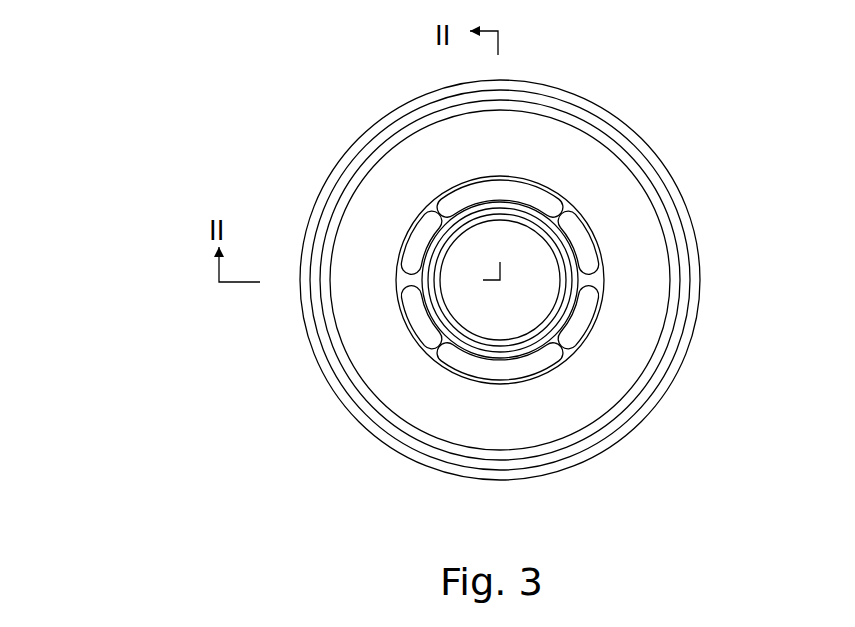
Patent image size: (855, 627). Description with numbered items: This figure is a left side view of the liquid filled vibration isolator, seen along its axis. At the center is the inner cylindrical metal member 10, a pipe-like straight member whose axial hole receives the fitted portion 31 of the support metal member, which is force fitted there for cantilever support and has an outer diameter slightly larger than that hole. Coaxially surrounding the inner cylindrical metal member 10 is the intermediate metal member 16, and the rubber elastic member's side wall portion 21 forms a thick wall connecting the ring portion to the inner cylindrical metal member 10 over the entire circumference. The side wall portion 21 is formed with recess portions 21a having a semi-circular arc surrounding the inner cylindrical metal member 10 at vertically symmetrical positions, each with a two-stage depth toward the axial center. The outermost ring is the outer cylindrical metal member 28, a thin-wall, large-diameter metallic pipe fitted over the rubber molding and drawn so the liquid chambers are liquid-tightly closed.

The inner cylindrical metal member 10 is at (562, 253).
The intermediate metal member 16 is at (680, 242).
The side wall portion 21 is at (587, 175).
The recess portion 21a is at (537, 193).
The outer cylindrical metal member 28 is at (548, 83).
The fitted portion 31 is at (538, 297).